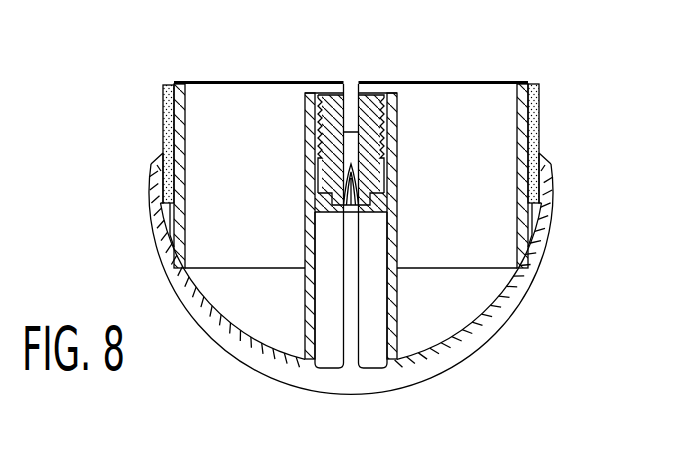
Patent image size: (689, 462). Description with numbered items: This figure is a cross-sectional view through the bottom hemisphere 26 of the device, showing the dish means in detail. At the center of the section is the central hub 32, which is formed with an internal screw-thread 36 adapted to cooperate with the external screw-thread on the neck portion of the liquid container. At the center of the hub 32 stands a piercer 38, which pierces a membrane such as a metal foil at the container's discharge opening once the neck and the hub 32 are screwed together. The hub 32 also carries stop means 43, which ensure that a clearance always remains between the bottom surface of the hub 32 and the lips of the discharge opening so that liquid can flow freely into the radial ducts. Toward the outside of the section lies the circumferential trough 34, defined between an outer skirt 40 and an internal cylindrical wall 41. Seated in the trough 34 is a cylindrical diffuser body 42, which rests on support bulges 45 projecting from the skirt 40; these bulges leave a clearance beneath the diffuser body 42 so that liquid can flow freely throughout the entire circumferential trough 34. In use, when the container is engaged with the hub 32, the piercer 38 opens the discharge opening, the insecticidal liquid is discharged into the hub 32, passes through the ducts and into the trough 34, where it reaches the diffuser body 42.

The bottom hemisphere 26 is at (497, 326).
The central hub 32 is at (372, 90).
The circumferential trough 34 is at (552, 173).
The internal screw-thread 36 is at (336, 87).
The piercer 38 is at (363, 182).
The skirt 40 is at (552, 158).
The internal cylindrical wall 41 is at (515, 115).
The cylindrical diffuser body 42 is at (531, 103).
The stop means 43 is at (312, 180).
The support bulges 45 is at (540, 208).